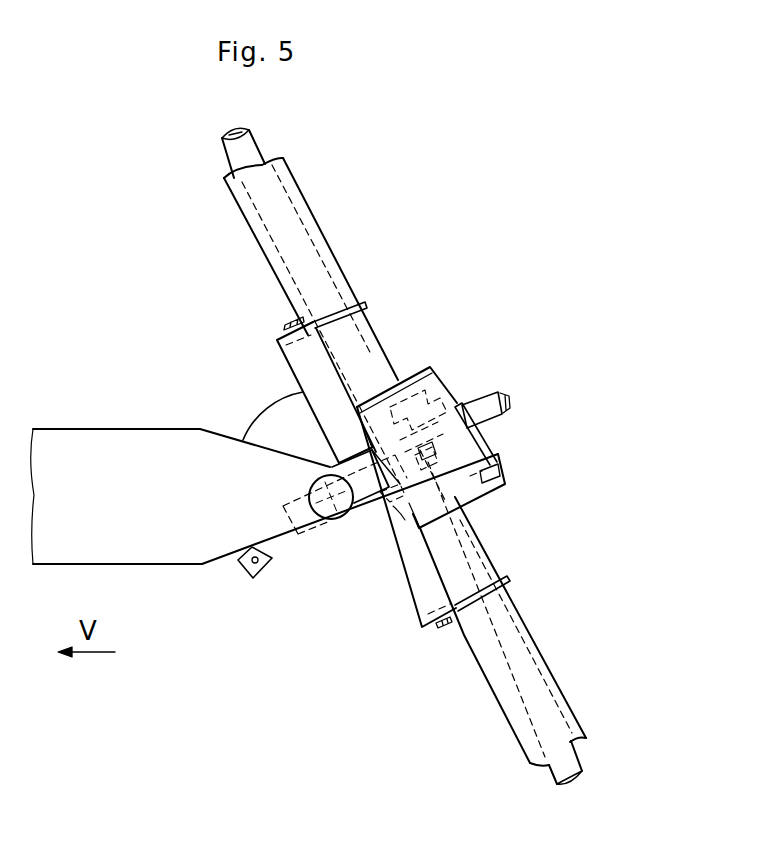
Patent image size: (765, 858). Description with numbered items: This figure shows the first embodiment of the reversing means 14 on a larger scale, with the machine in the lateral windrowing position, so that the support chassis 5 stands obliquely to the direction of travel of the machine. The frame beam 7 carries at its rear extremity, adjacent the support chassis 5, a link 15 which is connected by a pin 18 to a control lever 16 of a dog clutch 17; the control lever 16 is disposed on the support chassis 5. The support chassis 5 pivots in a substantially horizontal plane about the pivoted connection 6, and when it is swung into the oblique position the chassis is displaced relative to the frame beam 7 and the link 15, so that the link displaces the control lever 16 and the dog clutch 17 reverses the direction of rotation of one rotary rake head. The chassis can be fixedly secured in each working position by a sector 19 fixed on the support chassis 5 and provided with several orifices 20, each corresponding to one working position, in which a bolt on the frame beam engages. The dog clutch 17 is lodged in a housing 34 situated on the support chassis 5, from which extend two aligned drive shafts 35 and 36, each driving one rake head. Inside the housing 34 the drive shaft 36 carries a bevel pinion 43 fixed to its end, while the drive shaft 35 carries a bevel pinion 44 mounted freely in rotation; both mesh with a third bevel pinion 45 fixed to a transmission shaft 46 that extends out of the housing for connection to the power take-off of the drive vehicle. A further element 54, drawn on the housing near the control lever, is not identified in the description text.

The support chassis 5 is at (502, 700).
The pivoted connection 6 is at (336, 540).
The frame beam 7 is at (87, 440).
The reversing means 14 is at (514, 452).
The link 15 is at (490, 487).
The control lever 16 is at (485, 442).
The dog clutch 17 is at (427, 445).
The pin 18 is at (507, 478).
The sector 19 is at (256, 423).
The orifices 20 is at (243, 566).
The housing 34 is at (413, 390).
The drive shaft 35 is at (562, 771).
The drive shaft 36 is at (237, 141).
The bevel pinion 43 is at (365, 453).
The bevel pinion 44 is at (395, 507).
The third bevel pinion 45 is at (376, 512).
The transmission shaft 46 is at (305, 527).
The adjusting screw 54 is at (507, 400).